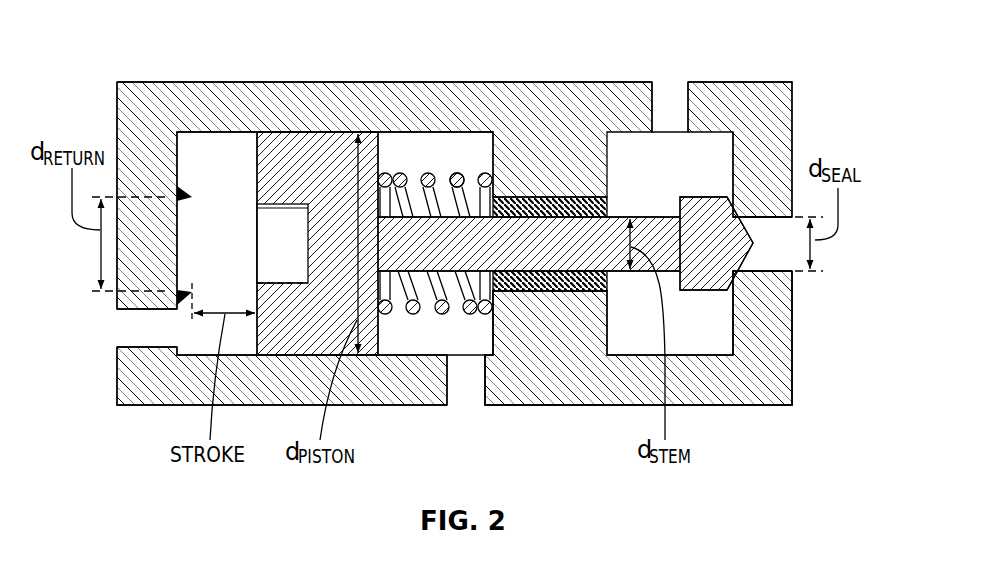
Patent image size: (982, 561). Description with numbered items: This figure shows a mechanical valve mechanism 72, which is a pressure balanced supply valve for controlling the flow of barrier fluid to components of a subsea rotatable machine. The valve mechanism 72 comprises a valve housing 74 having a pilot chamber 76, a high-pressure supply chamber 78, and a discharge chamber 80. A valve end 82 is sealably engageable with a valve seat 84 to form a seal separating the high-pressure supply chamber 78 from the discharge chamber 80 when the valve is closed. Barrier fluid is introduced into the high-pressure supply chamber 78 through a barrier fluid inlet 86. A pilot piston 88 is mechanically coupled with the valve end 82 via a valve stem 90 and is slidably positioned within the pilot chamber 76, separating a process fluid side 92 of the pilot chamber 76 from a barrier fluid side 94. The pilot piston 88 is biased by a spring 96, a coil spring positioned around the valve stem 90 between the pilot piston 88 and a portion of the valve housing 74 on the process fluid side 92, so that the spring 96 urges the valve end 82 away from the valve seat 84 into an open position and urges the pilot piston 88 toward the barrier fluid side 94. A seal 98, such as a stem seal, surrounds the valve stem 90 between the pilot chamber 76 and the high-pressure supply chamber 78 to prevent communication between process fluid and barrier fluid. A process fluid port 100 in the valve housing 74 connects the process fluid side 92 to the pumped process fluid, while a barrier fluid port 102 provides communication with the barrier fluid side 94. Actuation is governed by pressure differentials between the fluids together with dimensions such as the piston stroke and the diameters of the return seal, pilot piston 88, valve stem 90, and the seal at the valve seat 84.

The mechanical valve mechanism 72 is at (723, 74).
The valve housing 74 is at (152, 82).
The pilot chamber 76 is at (408, 132).
The high-pressure supply chamber 78 is at (707, 342).
The discharge chamber 80 is at (780, 268).
The valve end 82 is at (738, 252).
The valve seat 84 is at (727, 222).
The barrier fluid inlet 86 is at (650, 100).
The pilot piston 88 is at (328, 155).
The valve stem 90 is at (560, 255).
The process fluid side 92 is at (429, 134).
The barrier fluid side 94 is at (212, 130).
The spring 96 is at (458, 174).
The seal 98 is at (537, 195).
The process fluid port 100 is at (486, 384).
The barrier fluid port 102 is at (133, 348).